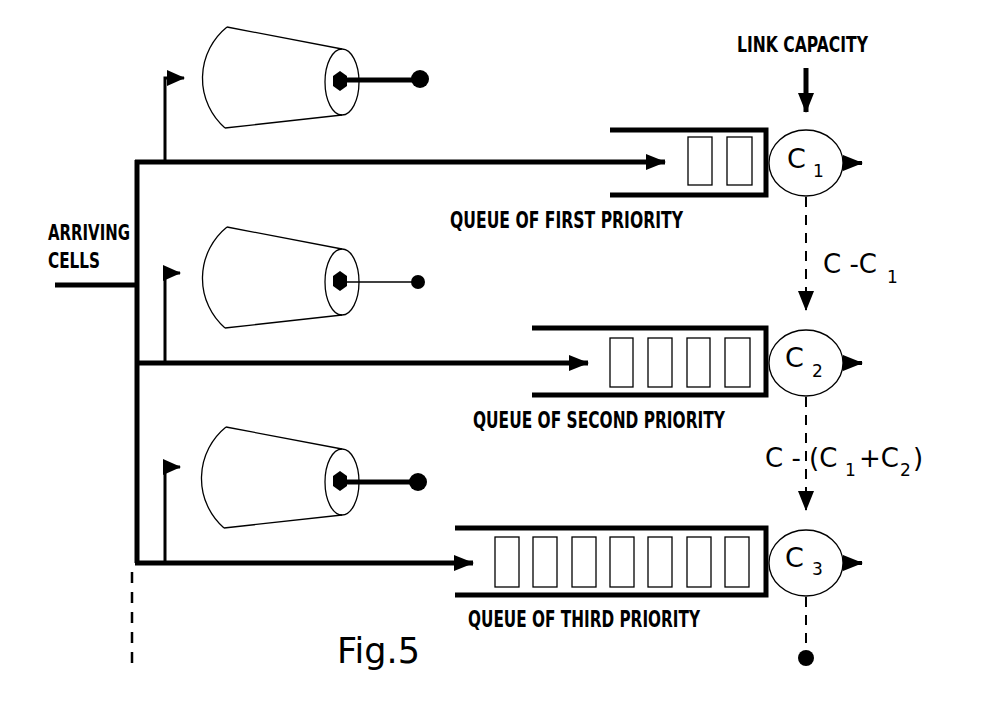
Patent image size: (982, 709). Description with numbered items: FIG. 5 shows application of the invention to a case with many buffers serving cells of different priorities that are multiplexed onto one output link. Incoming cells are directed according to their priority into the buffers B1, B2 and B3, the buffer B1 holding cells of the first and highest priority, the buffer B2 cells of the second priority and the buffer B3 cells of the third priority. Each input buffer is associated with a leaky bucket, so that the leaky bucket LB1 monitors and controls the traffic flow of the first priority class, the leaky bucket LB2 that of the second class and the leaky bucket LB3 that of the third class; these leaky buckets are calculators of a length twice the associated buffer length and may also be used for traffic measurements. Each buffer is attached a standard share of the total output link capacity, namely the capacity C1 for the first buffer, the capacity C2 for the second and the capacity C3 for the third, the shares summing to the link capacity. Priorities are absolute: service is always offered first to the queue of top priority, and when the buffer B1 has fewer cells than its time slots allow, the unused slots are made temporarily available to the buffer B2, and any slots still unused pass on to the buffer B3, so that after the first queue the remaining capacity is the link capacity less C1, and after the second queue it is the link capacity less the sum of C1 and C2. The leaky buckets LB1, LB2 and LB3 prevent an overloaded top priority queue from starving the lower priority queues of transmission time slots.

The buffer of first priority B1 is at (697, 125).
The buffer of second priority B2 is at (700, 325).
The buffer of third priority B3 is at (728, 523).
The leaky bucket for first priority LB1 is at (315, 77).
The leaky bucket for second priority LB2 is at (313, 277).
The leaky bucket for third priority LB3 is at (314, 477).
The capacity available to the first buffer C1 is at (455, 61).
The capacity available to the second buffer C2 is at (464, 286).
The capacity available to the third buffer C3 is at (455, 486).